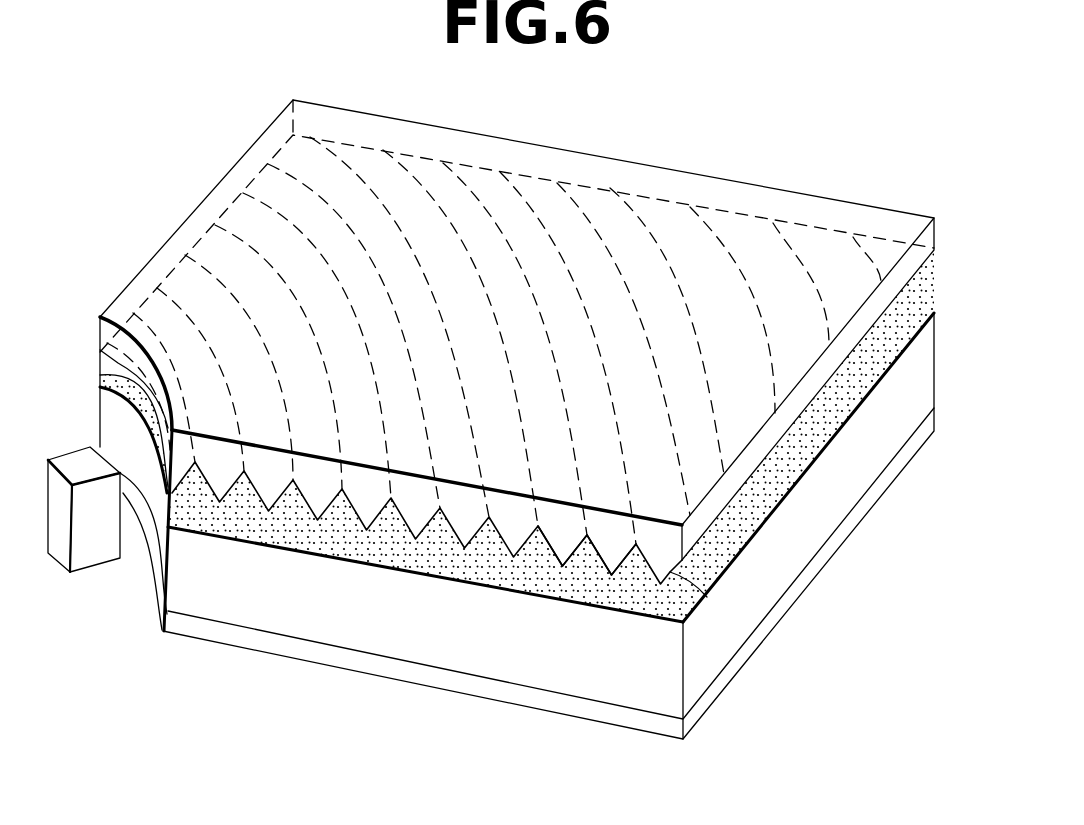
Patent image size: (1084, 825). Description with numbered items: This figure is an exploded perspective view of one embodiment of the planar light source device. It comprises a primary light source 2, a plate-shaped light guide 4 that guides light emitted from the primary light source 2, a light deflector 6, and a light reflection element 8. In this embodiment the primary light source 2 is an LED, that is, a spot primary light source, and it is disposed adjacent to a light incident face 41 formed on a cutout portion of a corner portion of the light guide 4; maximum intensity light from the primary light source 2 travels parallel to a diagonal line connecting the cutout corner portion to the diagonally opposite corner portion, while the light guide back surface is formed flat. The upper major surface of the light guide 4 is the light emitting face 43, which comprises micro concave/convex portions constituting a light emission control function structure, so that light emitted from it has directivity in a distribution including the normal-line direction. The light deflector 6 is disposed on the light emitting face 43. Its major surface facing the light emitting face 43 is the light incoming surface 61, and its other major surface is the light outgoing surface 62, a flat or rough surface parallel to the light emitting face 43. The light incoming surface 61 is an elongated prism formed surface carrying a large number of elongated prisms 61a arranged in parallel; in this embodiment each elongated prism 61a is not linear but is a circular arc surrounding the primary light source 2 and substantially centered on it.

The primary light source 2 is at (85, 553).
The light guide 4 is at (385, 625).
The light deflector 6 is at (750, 180).
The light reflection element 8 is at (463, 685).
The light incident face 41 is at (153, 475).
The light emitting face 43 is at (773, 476).
The light incoming surface 61 is at (705, 593).
The elongated prism 61a is at (563, 566).
The light outgoing surface 62 is at (672, 190).